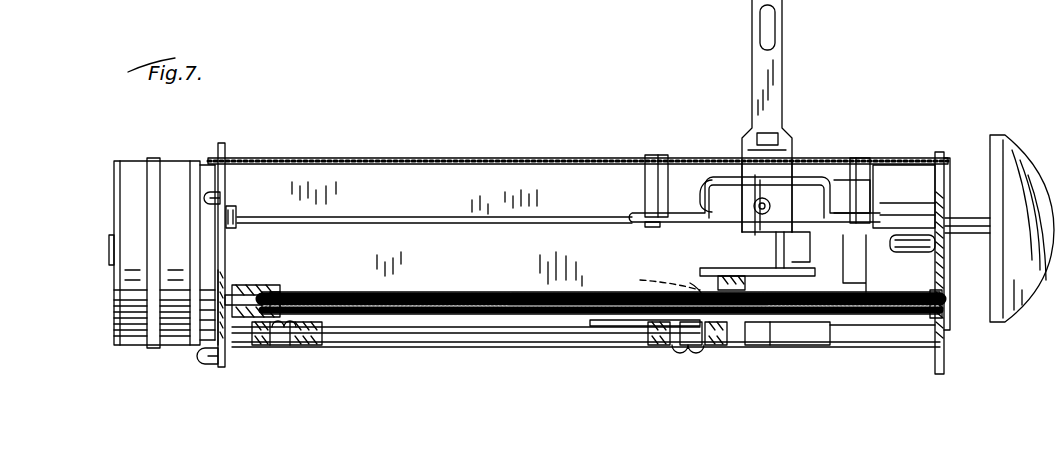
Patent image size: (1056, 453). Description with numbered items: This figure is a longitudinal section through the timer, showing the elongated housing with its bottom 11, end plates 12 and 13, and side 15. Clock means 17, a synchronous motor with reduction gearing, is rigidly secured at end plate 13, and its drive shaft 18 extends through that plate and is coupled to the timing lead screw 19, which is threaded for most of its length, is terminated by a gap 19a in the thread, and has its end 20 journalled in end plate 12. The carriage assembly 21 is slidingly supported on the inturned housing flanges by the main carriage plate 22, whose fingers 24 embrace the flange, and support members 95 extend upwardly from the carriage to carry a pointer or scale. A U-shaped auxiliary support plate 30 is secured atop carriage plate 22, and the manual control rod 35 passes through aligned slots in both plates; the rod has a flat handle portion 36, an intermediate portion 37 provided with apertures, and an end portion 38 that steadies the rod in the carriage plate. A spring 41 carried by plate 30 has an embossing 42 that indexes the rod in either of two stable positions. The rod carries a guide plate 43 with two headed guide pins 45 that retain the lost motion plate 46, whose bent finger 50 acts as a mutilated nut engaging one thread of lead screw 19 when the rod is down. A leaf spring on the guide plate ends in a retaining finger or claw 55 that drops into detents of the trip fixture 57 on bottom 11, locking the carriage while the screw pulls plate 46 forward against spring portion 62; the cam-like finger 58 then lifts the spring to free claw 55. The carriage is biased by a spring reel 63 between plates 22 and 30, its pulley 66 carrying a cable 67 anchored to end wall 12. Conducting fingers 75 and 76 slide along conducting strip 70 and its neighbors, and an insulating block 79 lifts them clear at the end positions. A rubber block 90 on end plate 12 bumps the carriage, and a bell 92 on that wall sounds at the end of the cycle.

The clock means 17 is at (133, 156).
The end plate 13 is at (226, 182).
The drive shaft 18 is at (238, 284).
The timing lead screw 19 is at (492, 290).
The support members 95 is at (650, 156).
The carriage assembly 21 is at (681, 188).
The spring reel 63 is at (720, 198).
The flat handle portion 36 is at (784, 28).
The manual control rod 35 is at (790, 63).
The intermediate portion 37 is at (794, 132).
The U-shaped auxiliary support plate 30 is at (792, 186).
The spring 41 is at (758, 180).
The embossing 42 is at (764, 198).
The pulley 66 is at (800, 210).
The main carriage plate 22 is at (692, 222).
The cable 67 is at (840, 225).
The end 12 is at (940, 156).
The bell 92 is at (1008, 148).
The end 20 is at (940, 304).
The rubber block 90 is at (918, 254).
The spring portion 62 is at (823, 283).
The end portion 38 is at (800, 262).
The lost motion plate 46 is at (706, 268).
The guide plate 43 is at (722, 268).
The guide pins 45 is at (777, 262).
The retaining finger 55 is at (656, 275).
The cam-like finger 58 is at (698, 290).
The trip fixture 57 is at (640, 322).
The conducting strip 70 is at (496, 328).
The bottom 11 is at (540, 343).
The conducting finger 76 is at (662, 345).
The conducting finger 75 is at (692, 345).
The insulating block 79 is at (760, 340).
The finger 50 is at (780, 330).
The gap 19a is at (845, 330).
The side 15 is at (540, 7).
The fingers 24 is at (778, 7).